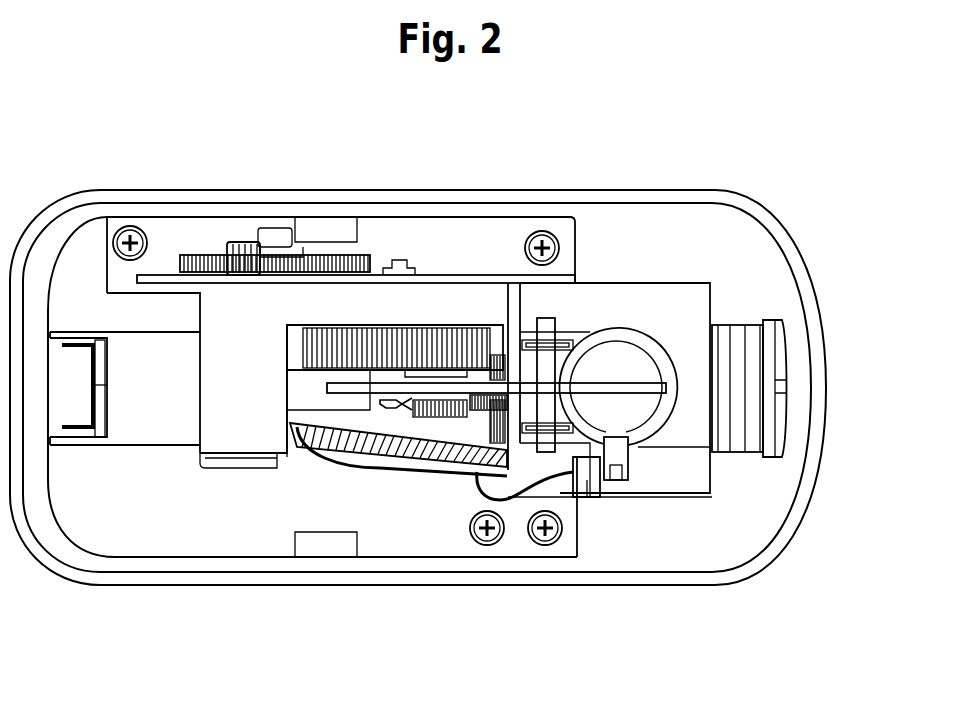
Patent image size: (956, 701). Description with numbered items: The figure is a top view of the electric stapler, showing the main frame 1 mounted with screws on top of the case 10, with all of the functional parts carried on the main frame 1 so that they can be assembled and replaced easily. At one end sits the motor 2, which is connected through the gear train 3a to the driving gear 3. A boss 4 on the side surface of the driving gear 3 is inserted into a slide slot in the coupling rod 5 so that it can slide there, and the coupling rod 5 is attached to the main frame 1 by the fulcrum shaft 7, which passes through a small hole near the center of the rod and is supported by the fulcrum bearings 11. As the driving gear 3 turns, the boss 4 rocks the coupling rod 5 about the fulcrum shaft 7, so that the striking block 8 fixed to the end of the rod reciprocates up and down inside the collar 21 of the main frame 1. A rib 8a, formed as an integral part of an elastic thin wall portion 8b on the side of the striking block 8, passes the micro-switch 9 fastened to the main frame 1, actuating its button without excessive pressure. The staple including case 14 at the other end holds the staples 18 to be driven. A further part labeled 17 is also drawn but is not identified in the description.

The main frame 1 is at (470, 290).
The motor 2 is at (222, 462).
The driving gear 3 is at (417, 332).
The gear train 3a is at (202, 255).
The boss 4 is at (430, 395).
The coupling rod 5 is at (470, 403).
The fulcrum shaft 7 is at (547, 333).
The striking block 8 is at (641, 353).
The rib 8a is at (618, 480).
The thin wall portion 8b is at (623, 450).
The micro-switch 9 is at (587, 483).
The case 10 is at (210, 545).
The fulcrum bearings 11 is at (538, 433).
The staple including case 14 is at (781, 353).
The click spring 17 is at (377, 403).
The staples 18 is at (502, 367).
The collar 21 is at (657, 430).